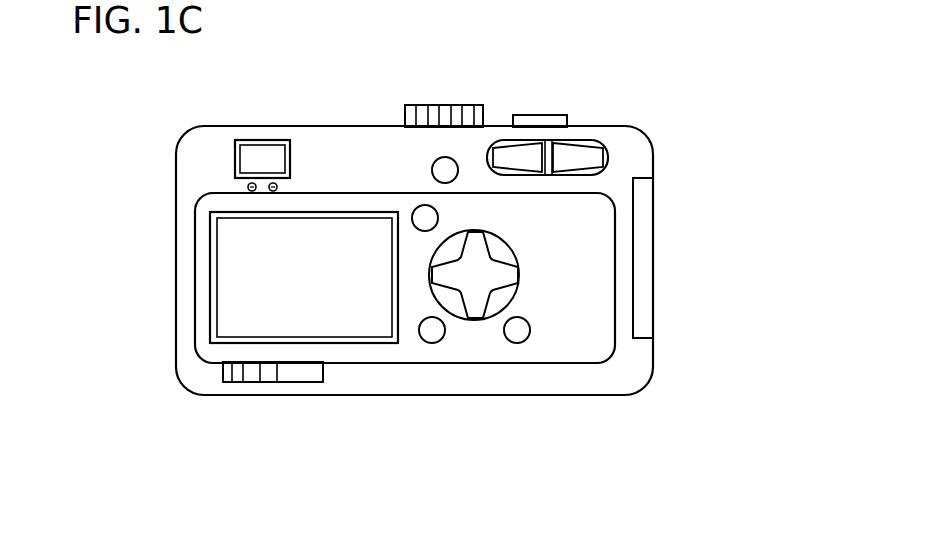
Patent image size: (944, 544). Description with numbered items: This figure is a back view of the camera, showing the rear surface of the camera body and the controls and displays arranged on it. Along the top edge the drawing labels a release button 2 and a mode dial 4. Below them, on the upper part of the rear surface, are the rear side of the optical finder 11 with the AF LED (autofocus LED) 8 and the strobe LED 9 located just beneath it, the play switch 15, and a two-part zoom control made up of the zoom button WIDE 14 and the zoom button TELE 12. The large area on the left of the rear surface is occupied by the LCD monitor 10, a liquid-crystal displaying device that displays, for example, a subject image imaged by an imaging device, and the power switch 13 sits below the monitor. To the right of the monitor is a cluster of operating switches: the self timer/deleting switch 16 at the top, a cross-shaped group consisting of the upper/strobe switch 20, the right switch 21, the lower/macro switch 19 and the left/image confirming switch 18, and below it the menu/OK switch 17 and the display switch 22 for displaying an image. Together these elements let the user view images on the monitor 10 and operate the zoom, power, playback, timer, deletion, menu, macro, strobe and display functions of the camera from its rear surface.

The release button (SW1) 2 is at (557, 120).
The mode dial (SW2) 4 is at (472, 113).
The AF LED 8 is at (248, 187).
The strobe LED 9 is at (277, 186).
The LCD monitor 10 is at (235, 278).
The optical finder 11 is at (262, 157).
The zoom button TELE 12 is at (593, 157).
The power switch 13 is at (243, 375).
The zoom button WIDE 14 is at (527, 153).
The play switch 15 is at (438, 170).
The self timer/deleting switch 16 is at (432, 216).
The menu/OK switch 17 is at (430, 338).
The left/image confirming switch 18 is at (445, 277).
The lower/macro switch 19 is at (477, 312).
The upper/strobe switch 20 is at (477, 243).
The right switch 21 is at (510, 273).
The display switch 22 is at (528, 330).